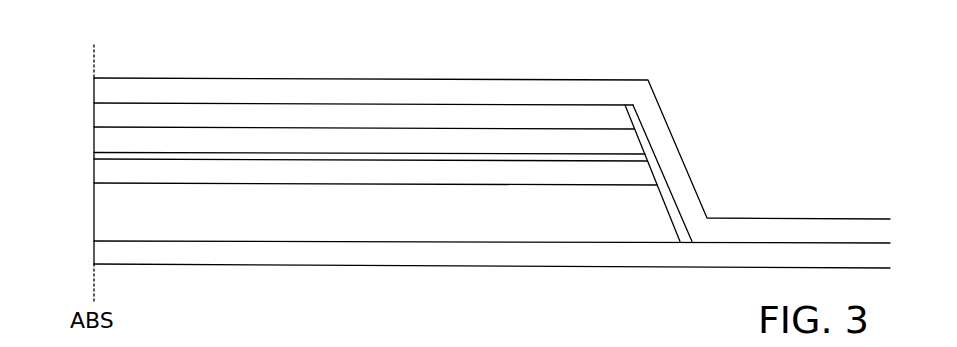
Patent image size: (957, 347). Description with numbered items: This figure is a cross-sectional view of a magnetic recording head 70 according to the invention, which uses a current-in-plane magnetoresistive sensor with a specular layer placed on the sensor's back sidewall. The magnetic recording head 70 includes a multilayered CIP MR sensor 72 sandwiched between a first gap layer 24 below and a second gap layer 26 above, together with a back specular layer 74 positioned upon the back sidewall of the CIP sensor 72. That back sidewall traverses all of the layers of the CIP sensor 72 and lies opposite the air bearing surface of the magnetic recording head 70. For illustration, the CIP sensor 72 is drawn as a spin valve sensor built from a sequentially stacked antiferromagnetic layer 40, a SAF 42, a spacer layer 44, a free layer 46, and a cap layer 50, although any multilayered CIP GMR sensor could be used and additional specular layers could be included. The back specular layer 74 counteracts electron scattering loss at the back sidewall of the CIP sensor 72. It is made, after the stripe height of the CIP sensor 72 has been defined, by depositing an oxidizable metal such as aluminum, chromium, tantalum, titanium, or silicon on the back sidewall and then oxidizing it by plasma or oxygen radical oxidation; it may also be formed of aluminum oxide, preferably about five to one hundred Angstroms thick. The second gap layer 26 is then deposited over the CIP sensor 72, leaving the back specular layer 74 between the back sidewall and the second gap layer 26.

The magnetic recording head 70 is at (492, 142).
The CIP MR sensor 72 is at (63, 173).
The back specular layer 74 is at (659, 173).
The first gap layer 24 is at (195, 249).
The second gap layer 26 is at (193, 95).
The antiferromagnetic layer 40 is at (335, 209).
The SAF 42 is at (460, 176).
The spacer layer 44 is at (592, 158).
The free layer 46 is at (293, 145).
The cap layer 50 is at (425, 120).